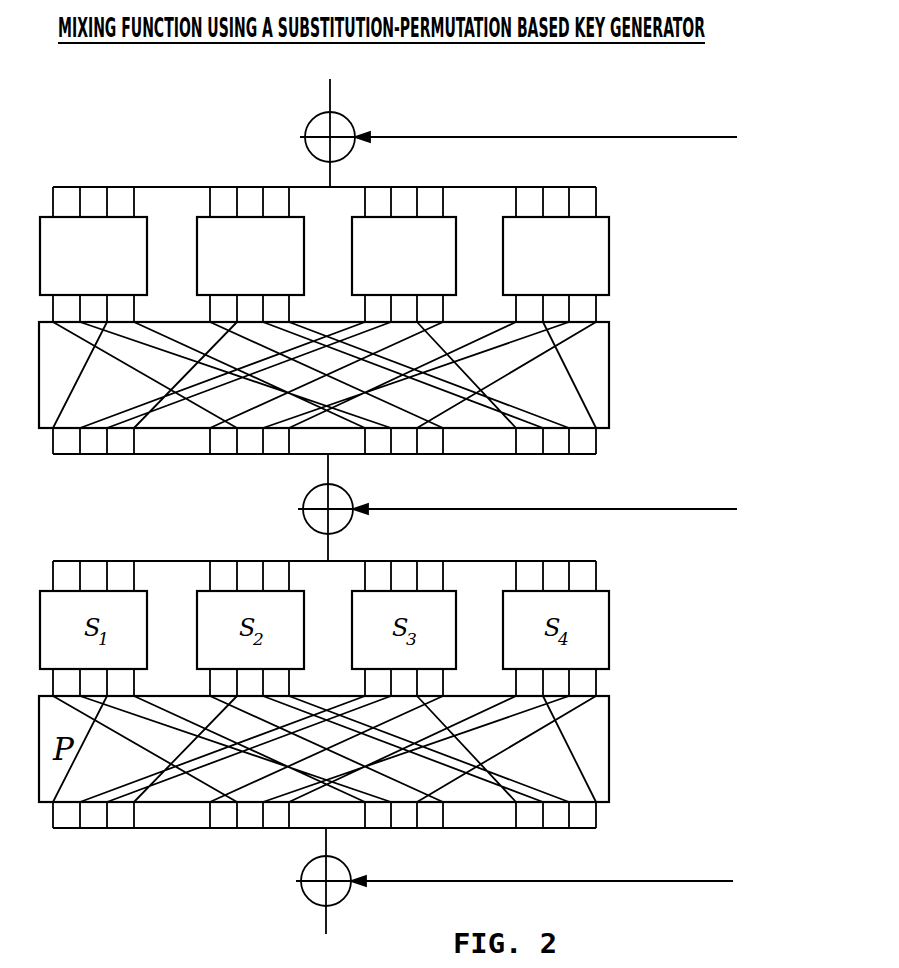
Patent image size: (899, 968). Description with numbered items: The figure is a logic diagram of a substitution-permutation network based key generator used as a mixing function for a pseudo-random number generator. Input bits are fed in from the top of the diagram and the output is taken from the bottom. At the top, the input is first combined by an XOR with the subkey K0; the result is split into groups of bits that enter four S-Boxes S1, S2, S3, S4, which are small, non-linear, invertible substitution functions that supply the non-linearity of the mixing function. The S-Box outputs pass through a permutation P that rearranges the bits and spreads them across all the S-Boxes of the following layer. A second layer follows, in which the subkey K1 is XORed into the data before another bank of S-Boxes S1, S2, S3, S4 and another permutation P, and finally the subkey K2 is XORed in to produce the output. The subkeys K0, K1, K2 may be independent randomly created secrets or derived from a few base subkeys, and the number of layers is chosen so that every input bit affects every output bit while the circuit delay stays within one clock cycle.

The subkey K0 is at (518, 133).
The subkey K1 is at (517, 507).
The subkey K2 is at (514, 881).
The S-Box S1 is at (93, 256).
The S-Box S2 is at (250, 256).
The S-Box S3 is at (404, 256).
The S-Box S4 is at (556, 256).
The permutation P is at (324, 375).